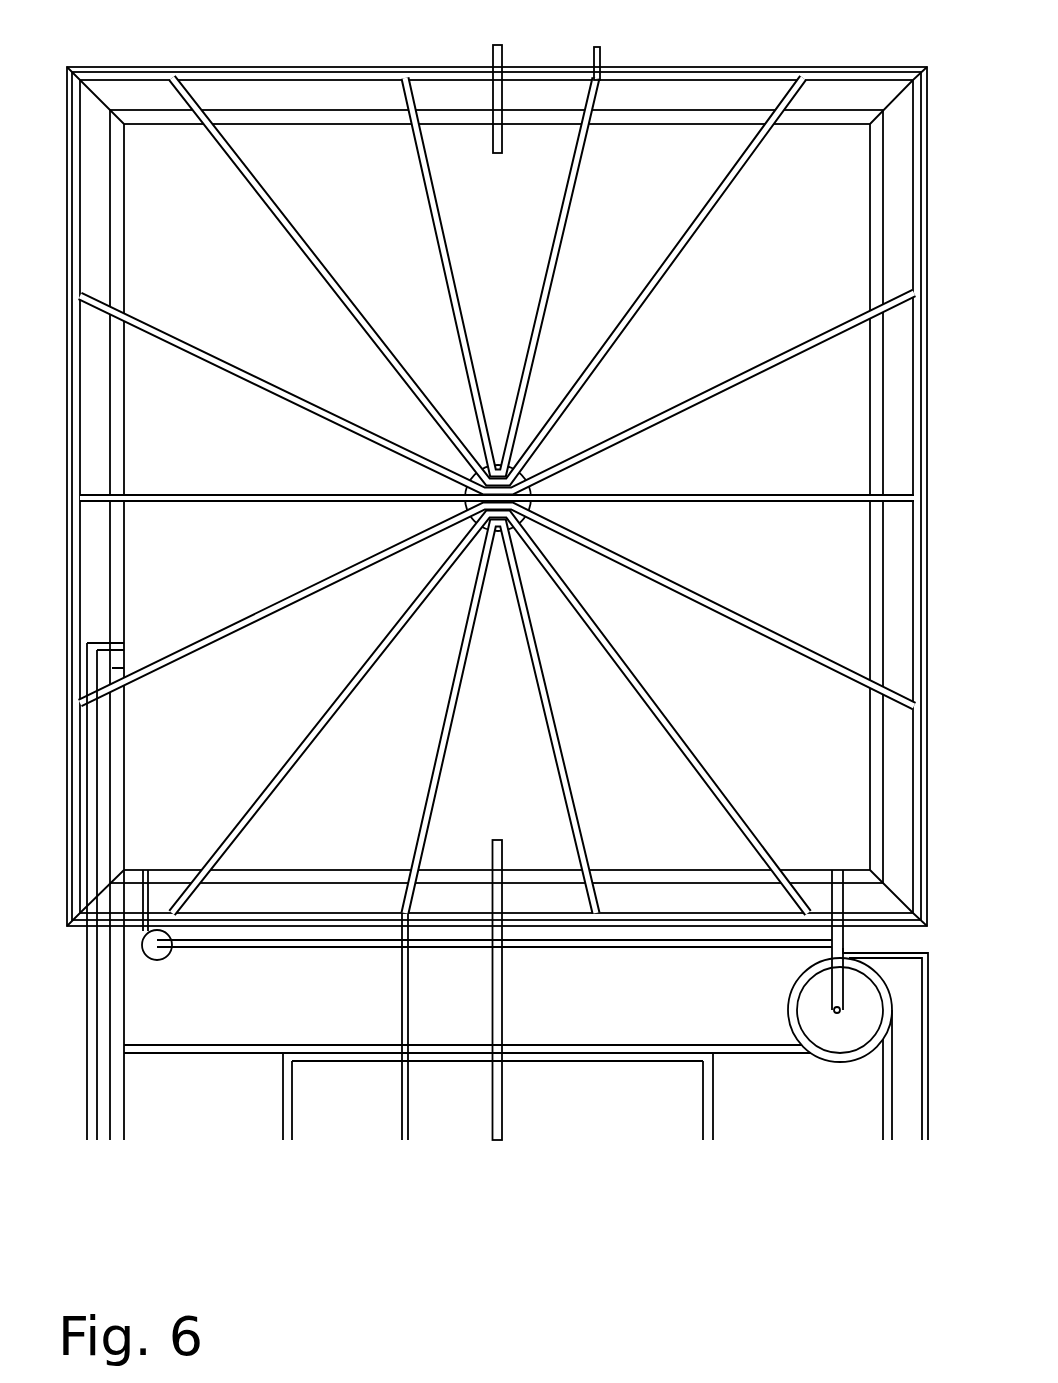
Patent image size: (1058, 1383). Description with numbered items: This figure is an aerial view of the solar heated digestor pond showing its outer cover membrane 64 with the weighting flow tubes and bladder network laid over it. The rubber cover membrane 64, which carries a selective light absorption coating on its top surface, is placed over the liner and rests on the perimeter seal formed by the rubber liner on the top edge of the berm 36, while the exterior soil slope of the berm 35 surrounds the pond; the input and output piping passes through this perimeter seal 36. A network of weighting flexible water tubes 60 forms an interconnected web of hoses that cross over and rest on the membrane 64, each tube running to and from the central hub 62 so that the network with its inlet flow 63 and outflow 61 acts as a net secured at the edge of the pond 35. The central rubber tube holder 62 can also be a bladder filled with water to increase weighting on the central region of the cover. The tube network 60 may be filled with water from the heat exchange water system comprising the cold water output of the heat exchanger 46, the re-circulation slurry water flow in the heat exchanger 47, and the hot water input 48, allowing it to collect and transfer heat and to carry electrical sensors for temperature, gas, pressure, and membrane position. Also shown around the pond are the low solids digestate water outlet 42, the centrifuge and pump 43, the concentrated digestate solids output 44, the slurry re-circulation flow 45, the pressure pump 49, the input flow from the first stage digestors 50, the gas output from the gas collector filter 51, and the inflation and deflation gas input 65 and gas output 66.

The exterior soil slope of berm 35 is at (125, 95).
The rubber liner on top edge of berm 36 is at (223, 117).
The low solids digestate water out 42 is at (925, 1142).
The centrifuge and pump 43 is at (838, 1063).
The concentrated digestate solids output 44 is at (888, 1142).
The slurry re-circulation flow 45 is at (768, 1052).
The cold water output of heat exchanger 46 is at (708, 1142).
The re-circulation slurry water flow in heat exchanger 47 is at (618, 1052).
The hot water input to heat exchanger 48 is at (288, 1142).
The pressure pump to low solids digestate water 49 is at (163, 957).
The input flow from first stage digestors of mixers 50 is at (120, 1142).
The gas output from gas collector filter 51 is at (92, 1142).
The weighting and heat transfer tube fluid flow network and electrical sensors 60 is at (267, 200).
The outflow of the fluid flow network and electrical sensors 61 is at (598, 47).
The rubber tube holder and fluid bladder and electrical sensors 62 is at (505, 368).
The inlet flow for the fluid flow network and electrical sensors 63 is at (405, 1142).
The rubber cover membrane with selective spectral absorption and emission coating 64 is at (638, 248).
The inflation and deflation gas input 65 is at (497, 1142).
The inflation and deflation gas output 66 is at (502, 48).